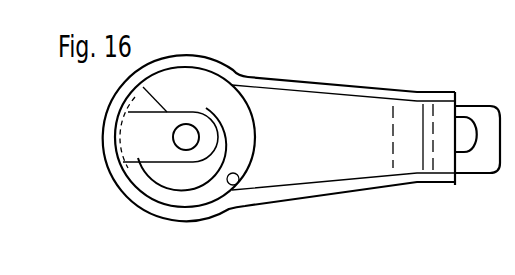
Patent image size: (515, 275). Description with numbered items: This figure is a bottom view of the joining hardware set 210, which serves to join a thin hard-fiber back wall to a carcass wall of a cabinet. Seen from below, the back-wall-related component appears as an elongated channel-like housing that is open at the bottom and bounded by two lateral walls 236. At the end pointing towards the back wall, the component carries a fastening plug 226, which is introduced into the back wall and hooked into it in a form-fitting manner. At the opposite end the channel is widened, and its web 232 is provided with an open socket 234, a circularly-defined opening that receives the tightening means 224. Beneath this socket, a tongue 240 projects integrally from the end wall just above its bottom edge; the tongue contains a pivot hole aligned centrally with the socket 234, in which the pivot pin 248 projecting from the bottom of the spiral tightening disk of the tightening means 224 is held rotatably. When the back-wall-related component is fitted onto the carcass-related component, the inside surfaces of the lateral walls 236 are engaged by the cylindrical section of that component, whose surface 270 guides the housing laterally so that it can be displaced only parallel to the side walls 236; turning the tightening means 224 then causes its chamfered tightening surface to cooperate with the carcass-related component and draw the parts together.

The joining hardware set 210 is at (403, 69).
The tightening means 224 is at (249, 89).
The fastening plug 226 is at (480, 103).
The web 232 is at (322, 124).
The socket 234 is at (235, 186).
The lateral walls 236 is at (359, 86).
The tongue 240 is at (138, 128).
The pivot pin 248 is at (178, 141).
The surface 270 is at (508, 210).